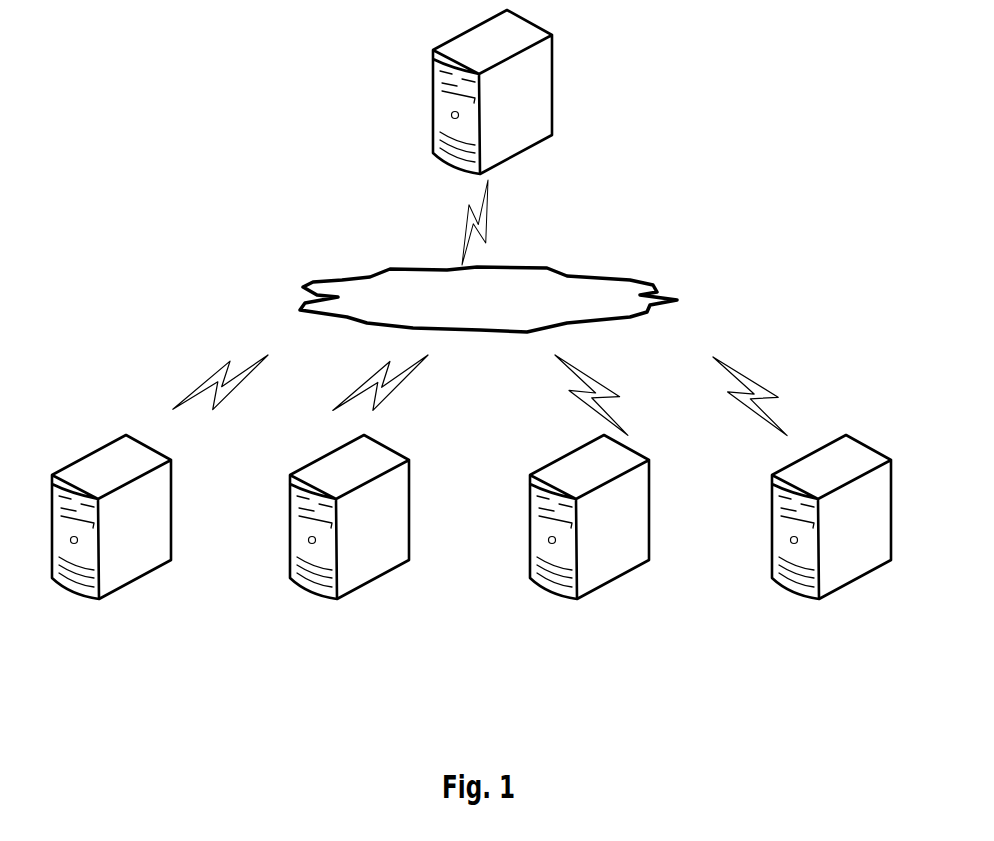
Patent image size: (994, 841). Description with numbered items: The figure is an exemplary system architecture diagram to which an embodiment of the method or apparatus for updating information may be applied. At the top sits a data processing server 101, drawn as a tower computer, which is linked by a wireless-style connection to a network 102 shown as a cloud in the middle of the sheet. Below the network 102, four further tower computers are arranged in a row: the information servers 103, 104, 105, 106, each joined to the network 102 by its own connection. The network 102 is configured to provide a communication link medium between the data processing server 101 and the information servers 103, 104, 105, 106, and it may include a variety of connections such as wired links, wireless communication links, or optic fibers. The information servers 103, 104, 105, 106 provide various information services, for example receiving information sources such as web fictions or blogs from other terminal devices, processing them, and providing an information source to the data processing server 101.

The data processing server 101 is at (529, 97).
The network 102 is at (610, 295).
The information server 103 is at (113, 573).
The information server 104 is at (365, 573).
The information server 105 is at (600, 573).
The information server 106 is at (847, 573).